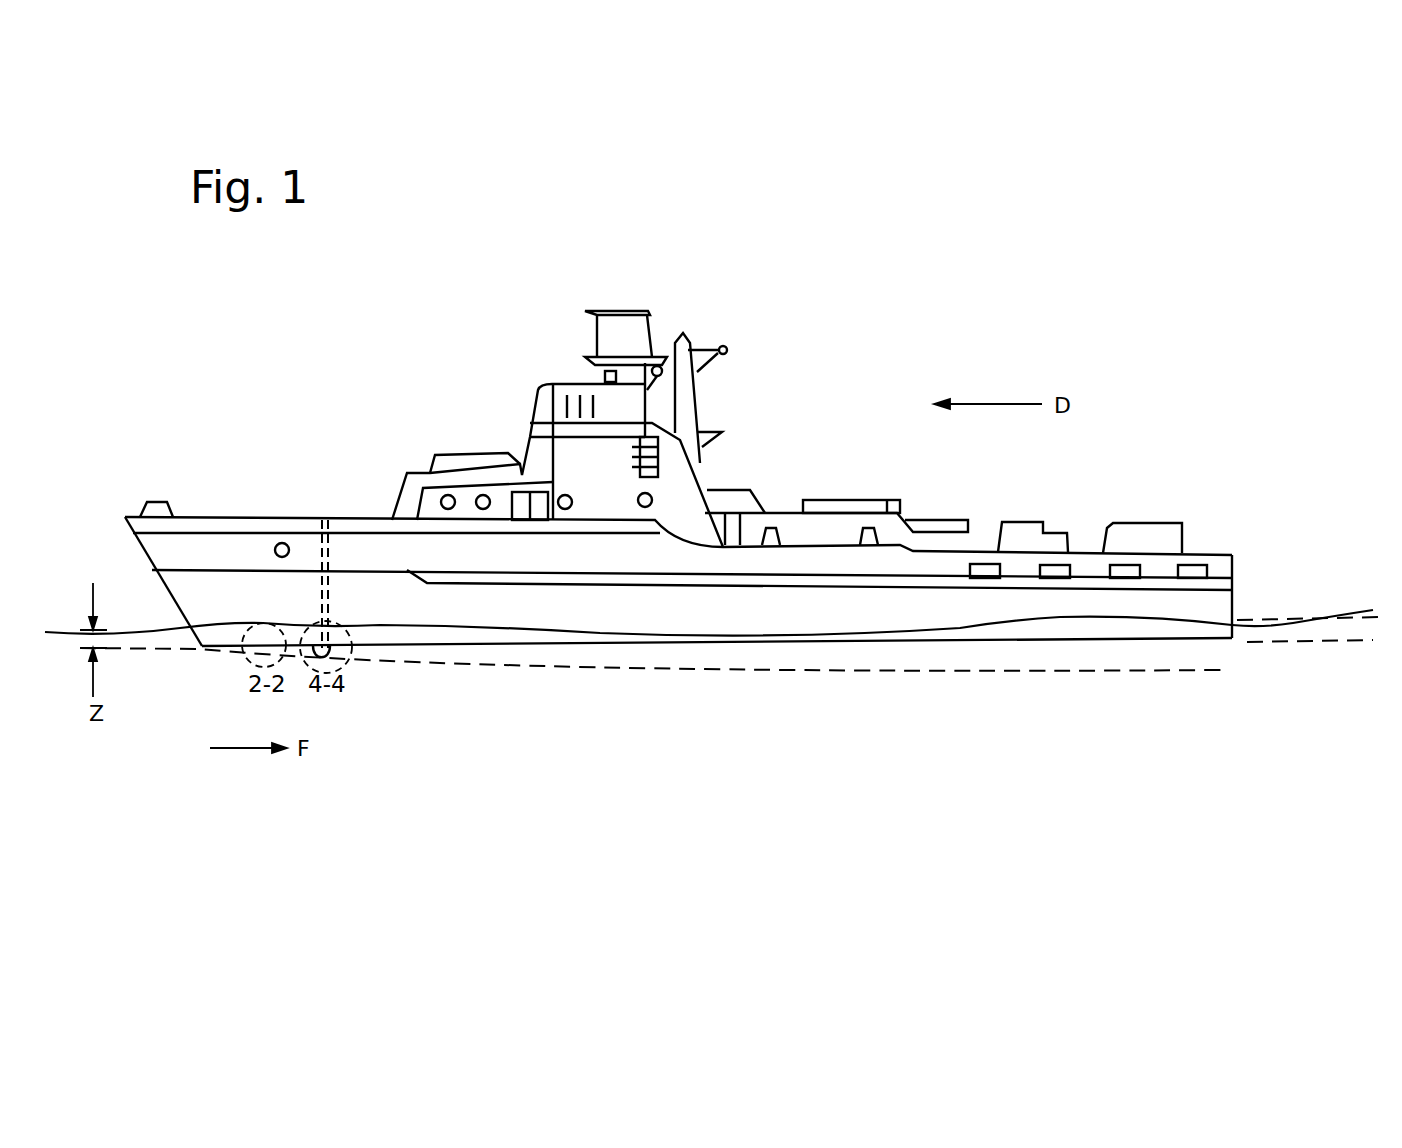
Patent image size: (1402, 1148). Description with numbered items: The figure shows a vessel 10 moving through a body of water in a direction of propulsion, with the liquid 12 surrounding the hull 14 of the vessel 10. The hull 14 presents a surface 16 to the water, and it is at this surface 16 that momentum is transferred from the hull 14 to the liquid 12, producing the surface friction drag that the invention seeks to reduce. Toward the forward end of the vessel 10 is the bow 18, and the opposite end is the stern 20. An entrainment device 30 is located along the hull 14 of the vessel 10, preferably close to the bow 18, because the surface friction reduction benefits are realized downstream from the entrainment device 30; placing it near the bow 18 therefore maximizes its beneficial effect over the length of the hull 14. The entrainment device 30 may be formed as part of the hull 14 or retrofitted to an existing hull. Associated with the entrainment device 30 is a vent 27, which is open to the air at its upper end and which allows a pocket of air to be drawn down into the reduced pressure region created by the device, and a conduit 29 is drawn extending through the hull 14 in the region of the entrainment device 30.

The vessel 10 is at (842, 333).
The liquid 12 is at (1292, 633).
The hull 14 is at (945, 612).
The surface of the hull 16 is at (757, 645).
The bow 18 is at (183, 587).
The stern 20 is at (1218, 555).
The vent 27 is at (317, 588).
The shaft / conduit 29 is at (322, 518).
The entrainment device 30 is at (333, 658).